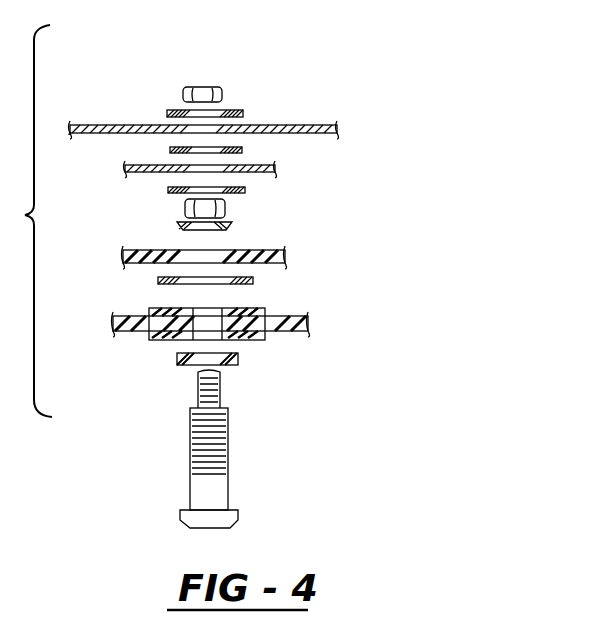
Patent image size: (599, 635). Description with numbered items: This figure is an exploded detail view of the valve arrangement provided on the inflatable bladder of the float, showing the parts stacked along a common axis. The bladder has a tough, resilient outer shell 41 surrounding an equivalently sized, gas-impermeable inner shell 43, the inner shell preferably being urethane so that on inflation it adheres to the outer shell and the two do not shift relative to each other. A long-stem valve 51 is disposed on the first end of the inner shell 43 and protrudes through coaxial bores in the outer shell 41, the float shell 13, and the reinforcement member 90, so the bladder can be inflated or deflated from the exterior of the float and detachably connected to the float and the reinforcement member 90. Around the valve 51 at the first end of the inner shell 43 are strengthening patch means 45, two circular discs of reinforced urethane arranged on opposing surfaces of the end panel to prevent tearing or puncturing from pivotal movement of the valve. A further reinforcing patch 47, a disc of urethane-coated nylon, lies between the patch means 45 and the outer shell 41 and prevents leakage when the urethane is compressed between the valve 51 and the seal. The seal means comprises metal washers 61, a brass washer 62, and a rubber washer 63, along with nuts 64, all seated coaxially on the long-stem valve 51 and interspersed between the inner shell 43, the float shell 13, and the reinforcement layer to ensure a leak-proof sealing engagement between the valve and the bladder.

The float shell 13 is at (277, 168).
The outer shell 41 is at (286, 255).
The inner shell 43 is at (308, 322).
The strengthening patch means 45 is at (152, 337).
The reinforcing patch 47 is at (158, 281).
The long-stem valve 51 is at (220, 487).
The metal washer 61 is at (246, 114).
The brass washer 62 is at (177, 226).
The rubber washer 63 is at (238, 358).
The nut 64 is at (224, 95).
The reinforcement member 90 is at (338, 128).